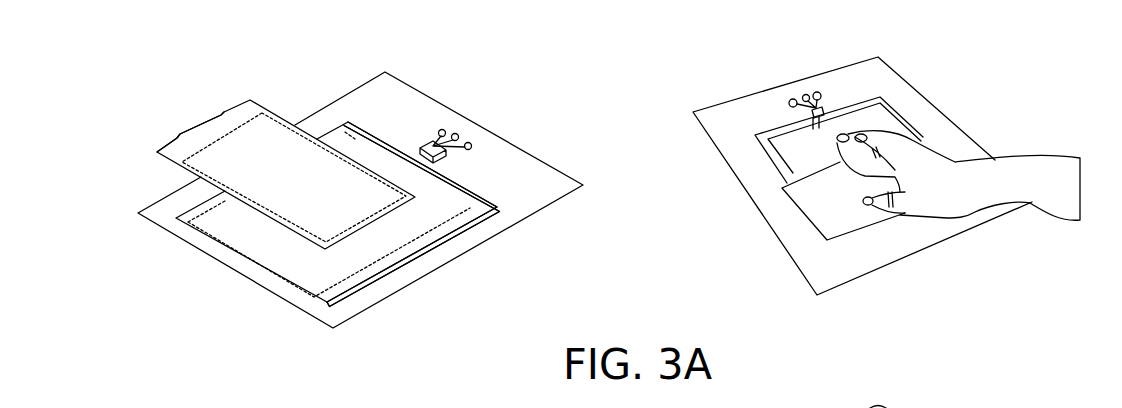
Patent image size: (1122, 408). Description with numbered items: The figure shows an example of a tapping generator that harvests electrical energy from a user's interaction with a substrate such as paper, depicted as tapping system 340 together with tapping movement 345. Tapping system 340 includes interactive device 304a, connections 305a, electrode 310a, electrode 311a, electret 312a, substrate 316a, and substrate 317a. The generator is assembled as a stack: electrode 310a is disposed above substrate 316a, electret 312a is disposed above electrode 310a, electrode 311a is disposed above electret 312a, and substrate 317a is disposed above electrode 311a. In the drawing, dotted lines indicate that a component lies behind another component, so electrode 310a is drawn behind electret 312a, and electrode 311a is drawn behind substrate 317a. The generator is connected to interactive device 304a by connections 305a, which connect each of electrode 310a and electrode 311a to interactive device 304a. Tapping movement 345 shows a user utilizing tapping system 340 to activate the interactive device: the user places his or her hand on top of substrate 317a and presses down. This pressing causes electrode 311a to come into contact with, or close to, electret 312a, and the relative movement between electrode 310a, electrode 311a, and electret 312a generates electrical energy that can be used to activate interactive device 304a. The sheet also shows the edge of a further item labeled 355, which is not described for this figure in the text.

The tapping system 340 is at (342, 174).
The interactive device 304a is at (464, 131).
The connections 305a is at (347, 120).
The electrode 310a is at (330, 274).
The electrode 311a is at (258, 174).
The electret 312a is at (235, 267).
The substrate 316a is at (360, 200).
The substrate 317a is at (158, 160).
The tapping movement 345 is at (935, 57).
The assembly (partial) 355 is at (986, 402).